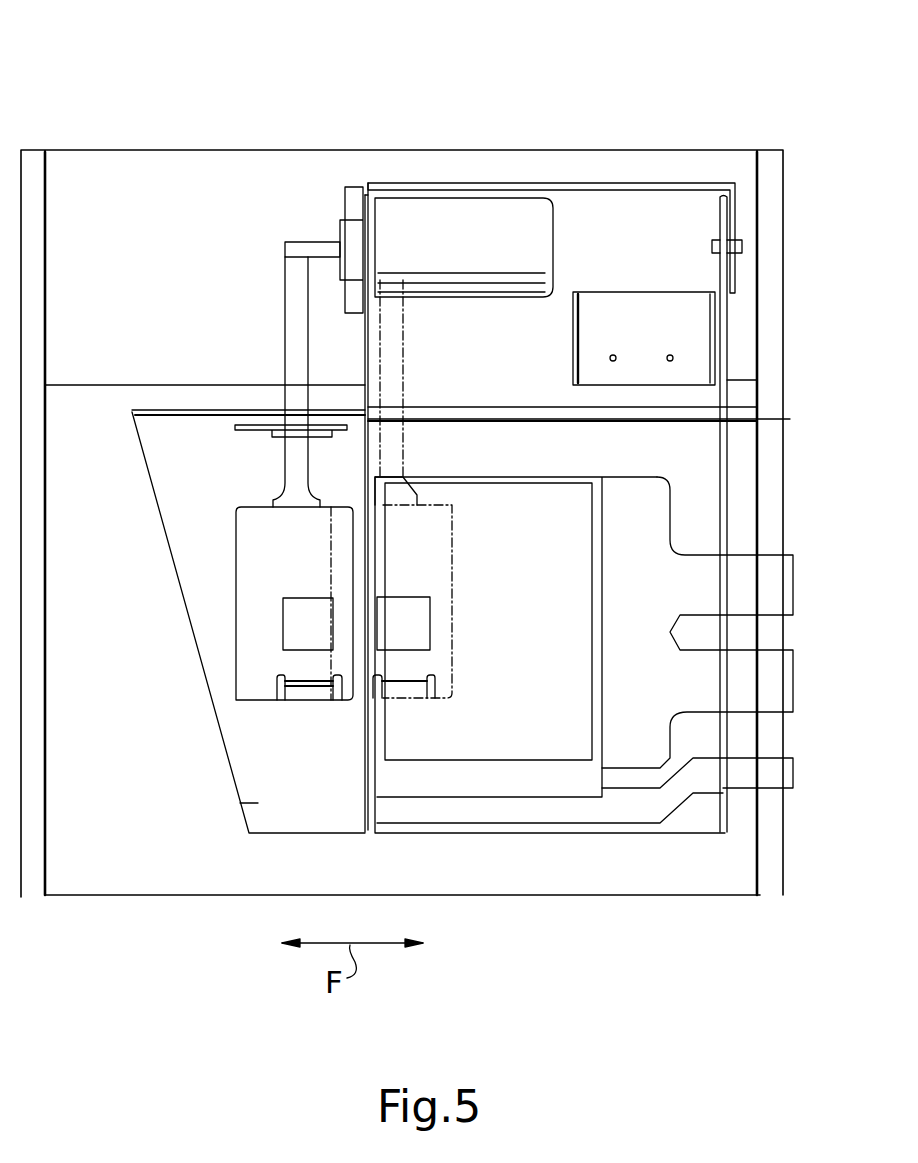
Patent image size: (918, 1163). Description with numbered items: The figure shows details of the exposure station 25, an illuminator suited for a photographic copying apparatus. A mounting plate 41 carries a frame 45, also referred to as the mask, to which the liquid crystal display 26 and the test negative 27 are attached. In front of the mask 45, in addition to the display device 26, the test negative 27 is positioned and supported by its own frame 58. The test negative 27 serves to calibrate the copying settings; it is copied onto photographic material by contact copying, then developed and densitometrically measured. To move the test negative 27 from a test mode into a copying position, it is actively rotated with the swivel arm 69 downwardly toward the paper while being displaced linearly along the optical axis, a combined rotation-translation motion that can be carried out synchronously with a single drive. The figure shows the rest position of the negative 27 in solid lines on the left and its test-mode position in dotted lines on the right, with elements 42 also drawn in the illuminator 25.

The exposure station 25 is at (118, 102).
The swivel arm 69 is at (285, 295).
The mounting plate 41 is at (242, 806).
The frame 58 is at (253, 697).
The test negative 27 is at (305, 598).
The frame 45 is at (472, 785).
The liquid crystal display 26 is at (542, 745).
The connector tabs 42 is at (788, 682).